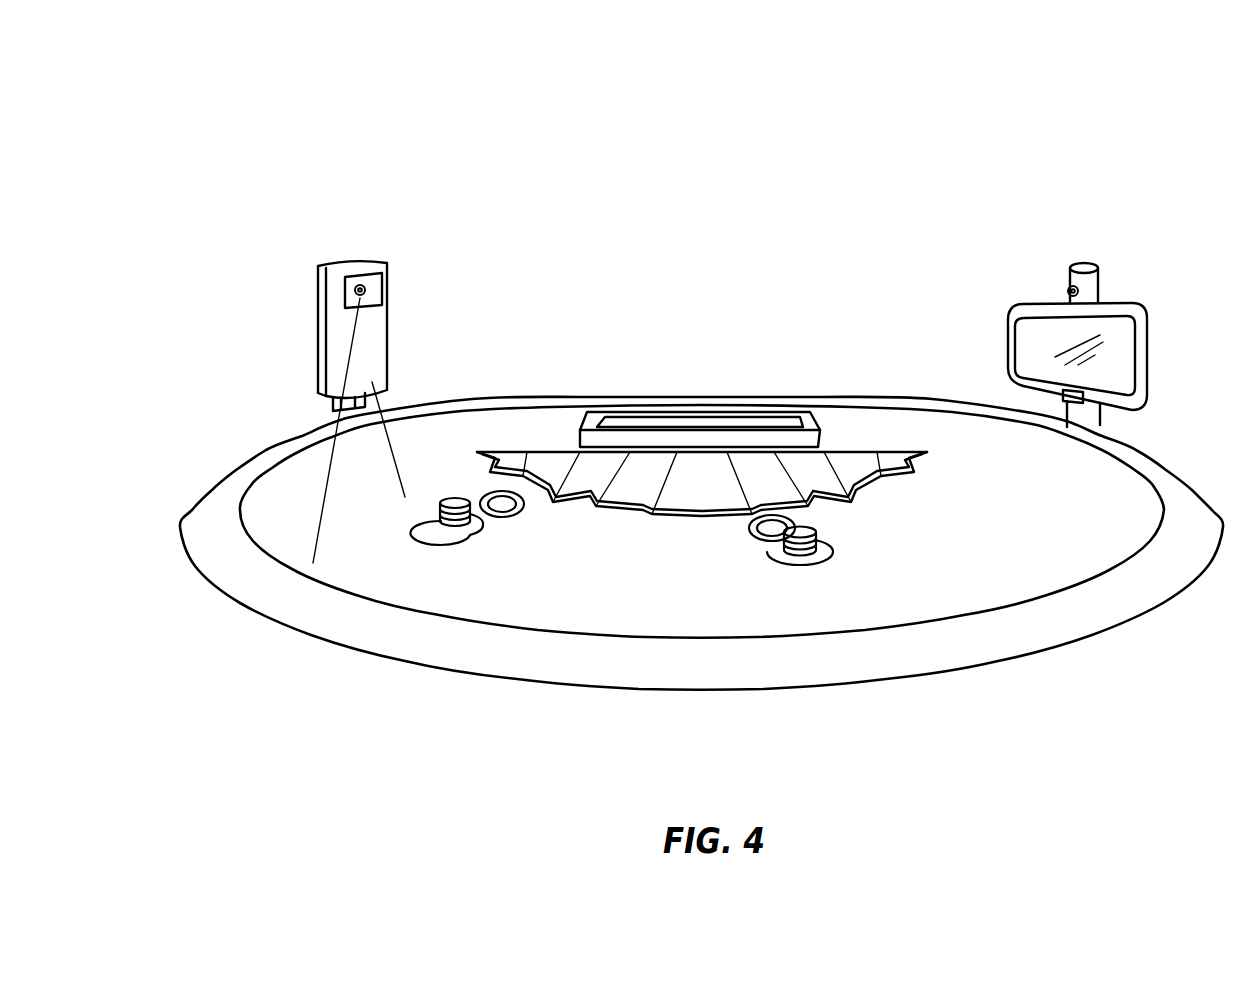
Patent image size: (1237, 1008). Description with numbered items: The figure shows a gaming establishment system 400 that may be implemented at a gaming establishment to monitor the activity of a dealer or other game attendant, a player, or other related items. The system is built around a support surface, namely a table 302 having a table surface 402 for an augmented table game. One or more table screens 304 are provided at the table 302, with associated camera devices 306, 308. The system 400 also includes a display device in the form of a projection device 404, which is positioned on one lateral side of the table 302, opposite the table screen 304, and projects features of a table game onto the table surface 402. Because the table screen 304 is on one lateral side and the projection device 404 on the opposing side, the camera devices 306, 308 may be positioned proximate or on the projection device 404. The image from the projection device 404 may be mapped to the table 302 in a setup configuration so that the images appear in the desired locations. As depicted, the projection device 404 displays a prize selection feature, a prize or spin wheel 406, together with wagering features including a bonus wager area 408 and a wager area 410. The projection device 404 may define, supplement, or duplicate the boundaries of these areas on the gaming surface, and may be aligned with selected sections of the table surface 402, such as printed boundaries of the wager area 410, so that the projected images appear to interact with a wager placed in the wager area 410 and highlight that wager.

The gaming establishment system 400 is at (940, 158).
The table 302 is at (732, 668).
The table screen 304 is at (1033, 330).
The camera device 306 is at (550, 427).
The camera device 308 is at (635, 373).
The table surface 402 is at (606, 540).
The projection device 404 is at (340, 352).
The prize wheel 406 is at (660, 483).
The bonus wager area 408 is at (500, 520).
The wager area 410 is at (446, 536).